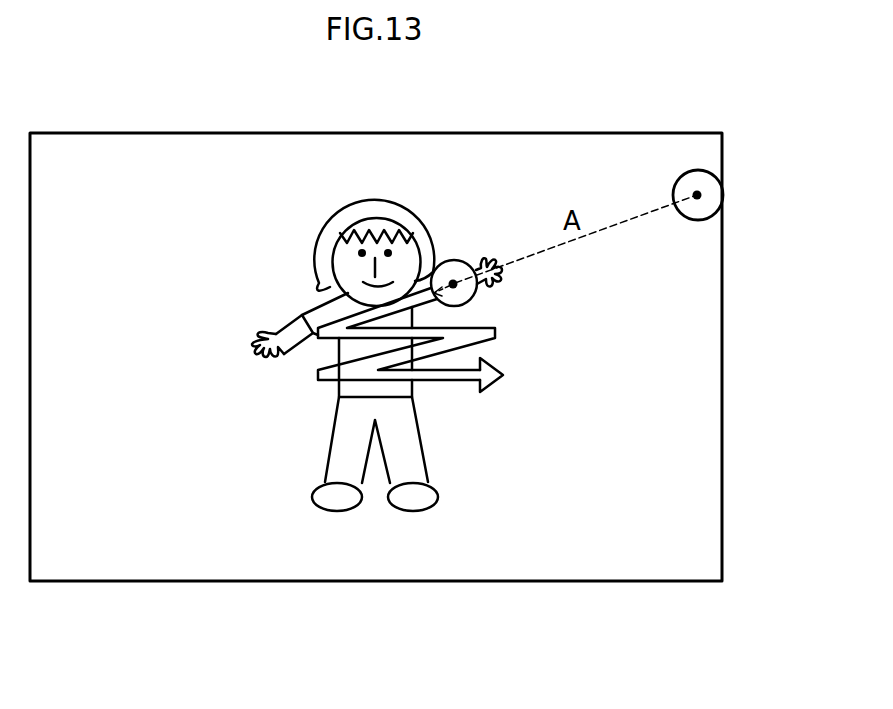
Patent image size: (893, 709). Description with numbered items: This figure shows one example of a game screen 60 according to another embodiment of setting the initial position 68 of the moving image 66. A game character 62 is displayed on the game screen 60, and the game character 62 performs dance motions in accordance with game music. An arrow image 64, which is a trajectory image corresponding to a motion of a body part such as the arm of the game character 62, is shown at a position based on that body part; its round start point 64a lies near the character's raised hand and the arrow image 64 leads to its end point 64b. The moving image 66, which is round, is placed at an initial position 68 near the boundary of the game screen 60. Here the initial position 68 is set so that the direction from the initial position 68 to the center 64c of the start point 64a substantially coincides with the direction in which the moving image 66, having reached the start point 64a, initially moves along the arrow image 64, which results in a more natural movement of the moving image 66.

The game screen 60 is at (723, 462).
The game character 62 is at (405, 208).
The arrow image 64 is at (318, 376).
The start point 64a is at (455, 261).
The end point 64b is at (494, 384).
The center of the start point 64c is at (454, 286).
The moving image 66 is at (697, 220).
The initial position 68 is at (701, 194).